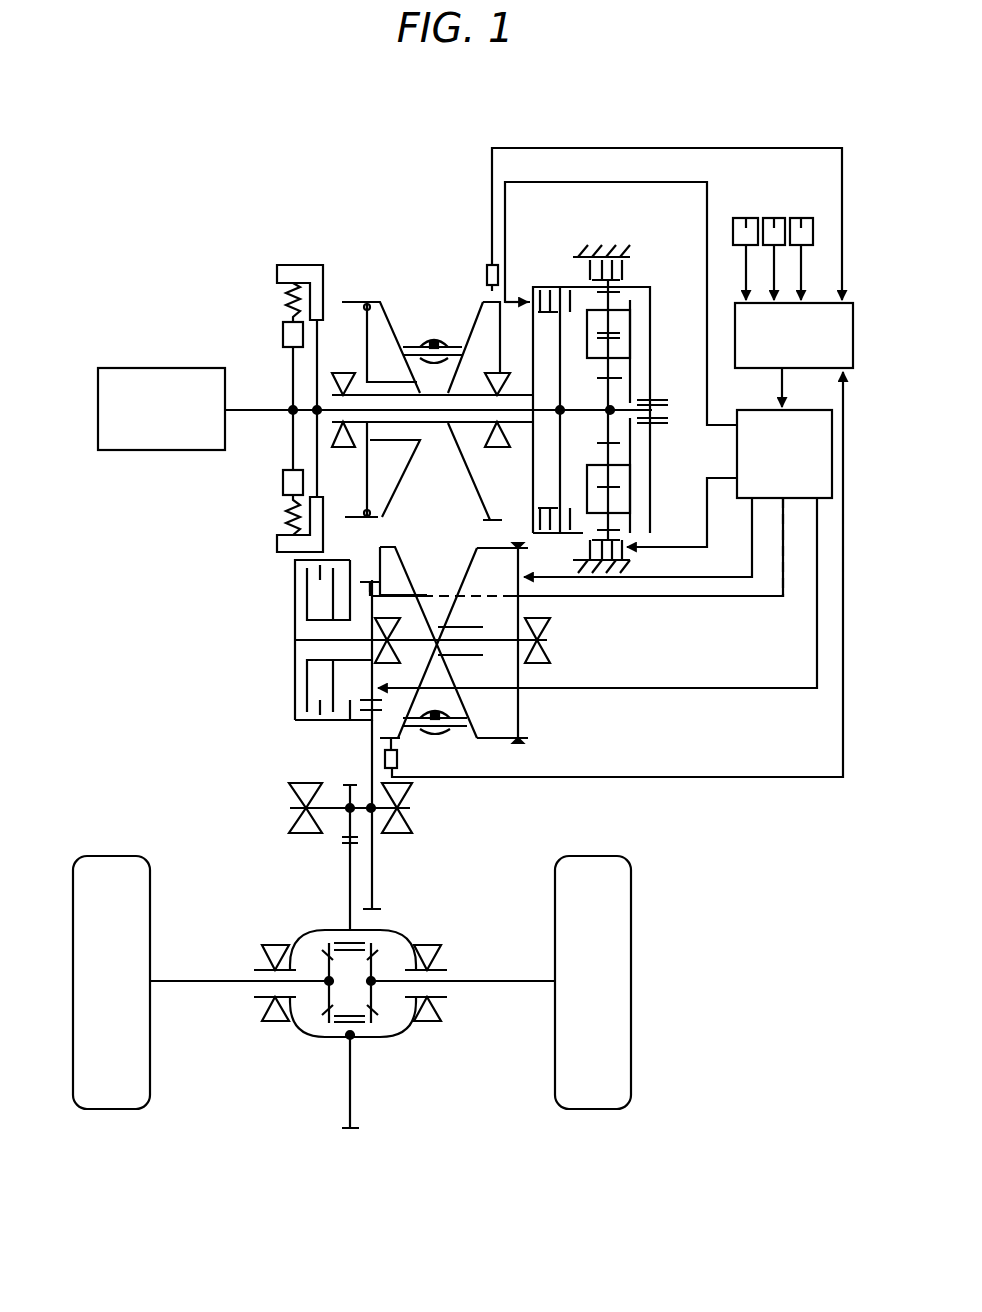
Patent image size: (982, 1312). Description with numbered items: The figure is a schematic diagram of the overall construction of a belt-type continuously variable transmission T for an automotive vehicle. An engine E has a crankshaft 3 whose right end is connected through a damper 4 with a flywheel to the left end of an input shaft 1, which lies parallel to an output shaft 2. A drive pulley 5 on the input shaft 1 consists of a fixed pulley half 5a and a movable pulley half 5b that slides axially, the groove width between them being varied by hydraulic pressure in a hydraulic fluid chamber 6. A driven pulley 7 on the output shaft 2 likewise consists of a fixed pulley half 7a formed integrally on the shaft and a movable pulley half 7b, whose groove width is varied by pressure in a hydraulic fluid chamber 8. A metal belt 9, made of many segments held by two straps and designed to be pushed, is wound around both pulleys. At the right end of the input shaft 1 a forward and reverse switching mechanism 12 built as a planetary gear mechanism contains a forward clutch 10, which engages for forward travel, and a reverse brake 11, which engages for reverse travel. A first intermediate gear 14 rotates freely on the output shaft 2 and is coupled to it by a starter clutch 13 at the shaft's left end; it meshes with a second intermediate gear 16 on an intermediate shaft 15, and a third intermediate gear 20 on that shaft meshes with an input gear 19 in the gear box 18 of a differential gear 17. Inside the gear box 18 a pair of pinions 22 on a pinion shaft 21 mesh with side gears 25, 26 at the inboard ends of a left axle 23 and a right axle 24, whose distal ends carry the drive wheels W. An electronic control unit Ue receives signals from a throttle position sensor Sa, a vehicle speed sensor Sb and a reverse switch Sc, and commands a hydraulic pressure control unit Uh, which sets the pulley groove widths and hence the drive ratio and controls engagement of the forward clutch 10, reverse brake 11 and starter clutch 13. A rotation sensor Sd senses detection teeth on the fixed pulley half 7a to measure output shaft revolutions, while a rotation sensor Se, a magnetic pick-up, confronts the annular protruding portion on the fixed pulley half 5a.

The input shaft 1 is at (655, 411).
The output shaft 2 is at (547, 640).
The crankshaft 3 is at (275, 412).
The damper 4 is at (327, 290).
The drive pulley 5 is at (432, 337).
The fixed pulley half 5a is at (470, 329).
The movable pulley half 5b is at (400, 335).
The hydraulic fluid chamber 6 is at (382, 492).
The driven pulley 7 is at (422, 602).
The fixed pulley half 7a is at (417, 550).
The movable pulley half 7b is at (400, 500).
The hydraulic fluid chamber 8 is at (482, 583).
The metal belt 9 is at (440, 732).
The forward clutch 10 is at (531, 276).
The reverse brake 11 is at (632, 265).
The forward and reverse switching mechanism 12 is at (664, 440).
The starter clutch 13 is at (308, 730).
The first intermediate gear 14 is at (370, 580).
The intermediate shaft 15 is at (292, 816).
The second intermediate gear 16 is at (366, 720).
The differential gear 17 is at (415, 931).
The gear box 18 is at (396, 1027).
The input gear 19 is at (356, 1131).
The third intermediate gear 20 is at (346, 788).
The pinion shaft 21 is at (360, 935).
The pinions 22 is at (325, 935).
The left axle 23 is at (222, 985).
The right axle 24 is at (500, 985).
The side gear 25 is at (325, 955).
The side gear 26 is at (390, 968).
The engine E is at (150, 425).
The drive wheels W is at (120, 868).
The belt-type continuously variable transmission T is at (547, 714).
The electronic control unit Ue is at (780, 350).
The hydraulic pressure control unit Uh is at (769, 467).
The throttle position sensor Sa is at (746, 218).
The vehicle speed sensor Sb is at (774, 218).
The reverse switch Sc is at (801, 218).
The rotation sensor Sd is at (399, 762).
The rotation sensor Se is at (491, 262).